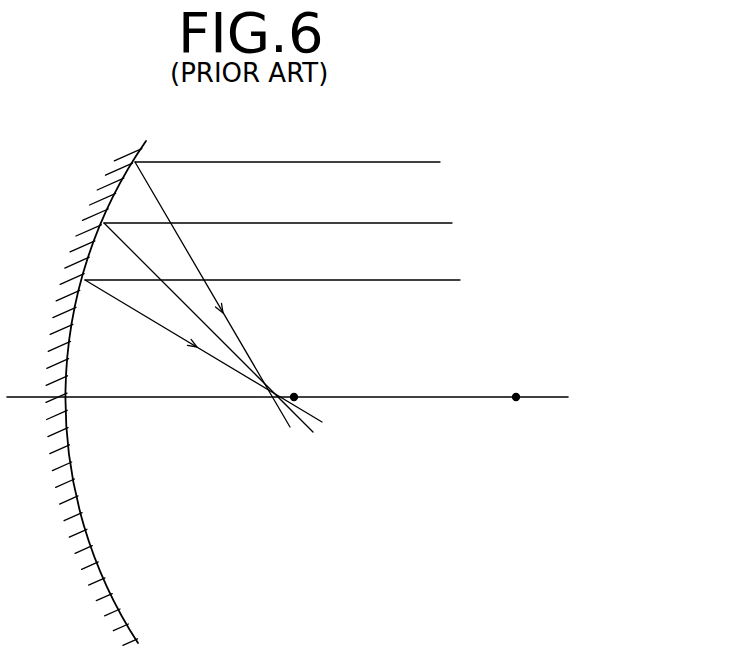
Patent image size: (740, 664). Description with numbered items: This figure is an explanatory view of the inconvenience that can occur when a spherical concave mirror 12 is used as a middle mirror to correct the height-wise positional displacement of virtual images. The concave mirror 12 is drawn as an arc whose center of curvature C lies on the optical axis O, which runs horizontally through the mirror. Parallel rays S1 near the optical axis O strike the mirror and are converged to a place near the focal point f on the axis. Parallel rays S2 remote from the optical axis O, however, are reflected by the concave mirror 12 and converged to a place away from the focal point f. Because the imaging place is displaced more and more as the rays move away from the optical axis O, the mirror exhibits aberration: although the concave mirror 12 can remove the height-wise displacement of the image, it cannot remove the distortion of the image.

The spherical concave mirror 12 is at (90, 216).
The parallel rays near the optical axis S1 is at (320, 282).
The parallel rays remote from the optical axis S2 is at (318, 162).
The focal point f is at (297, 395).
The center of curvature C is at (516, 401).
The optical axis O is at (226, 399).